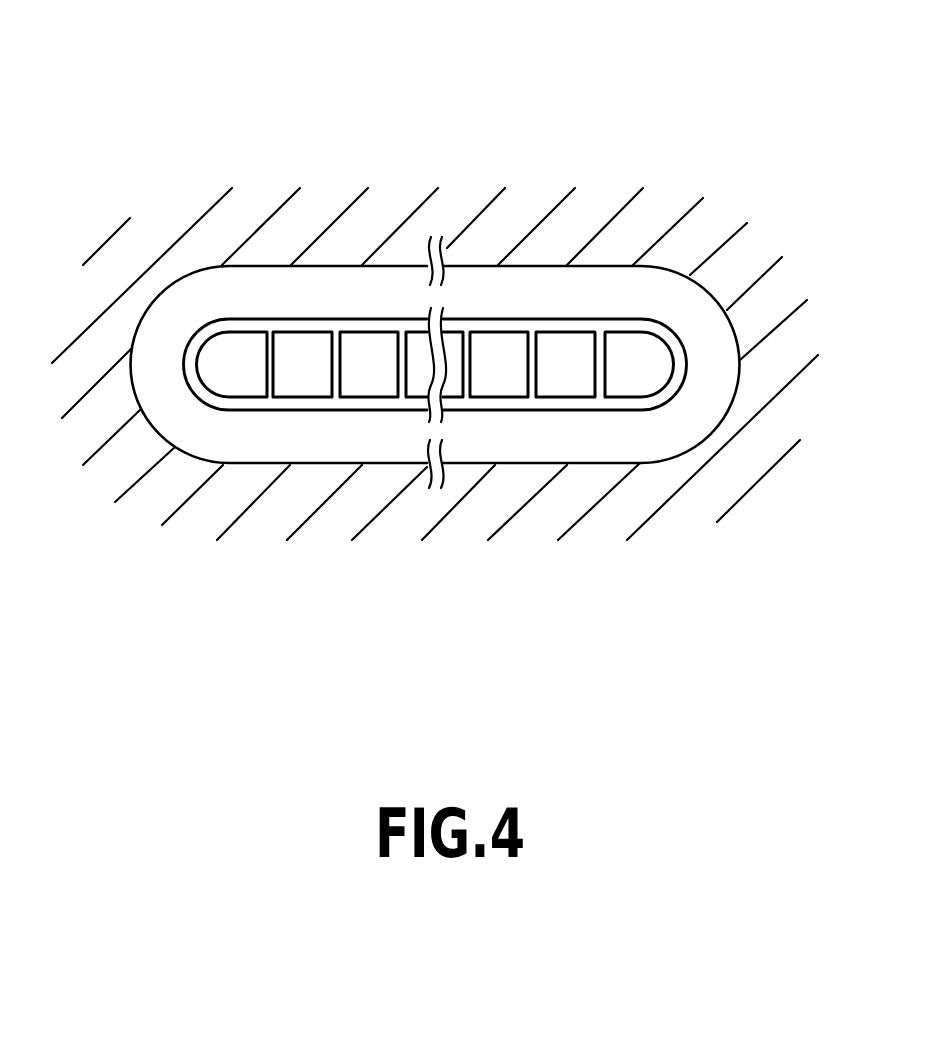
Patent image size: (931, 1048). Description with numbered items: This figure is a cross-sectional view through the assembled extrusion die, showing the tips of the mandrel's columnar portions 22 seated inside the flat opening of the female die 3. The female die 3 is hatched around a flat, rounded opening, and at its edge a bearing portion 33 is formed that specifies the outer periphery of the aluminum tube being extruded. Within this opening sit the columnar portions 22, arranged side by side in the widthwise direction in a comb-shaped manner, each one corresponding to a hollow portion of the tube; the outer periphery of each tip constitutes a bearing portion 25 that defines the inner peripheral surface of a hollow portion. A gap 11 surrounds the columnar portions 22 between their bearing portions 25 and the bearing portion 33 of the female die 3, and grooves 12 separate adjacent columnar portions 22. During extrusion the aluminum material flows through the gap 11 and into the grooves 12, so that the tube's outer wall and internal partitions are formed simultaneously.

The female die 3 is at (472, 173).
The gap 11 is at (228, 323).
The bearing portion 33 is at (567, 319).
The columnar portions 22 is at (375, 373).
The grooves 12 is at (528, 367).
The bearing portion 25 is at (596, 366).